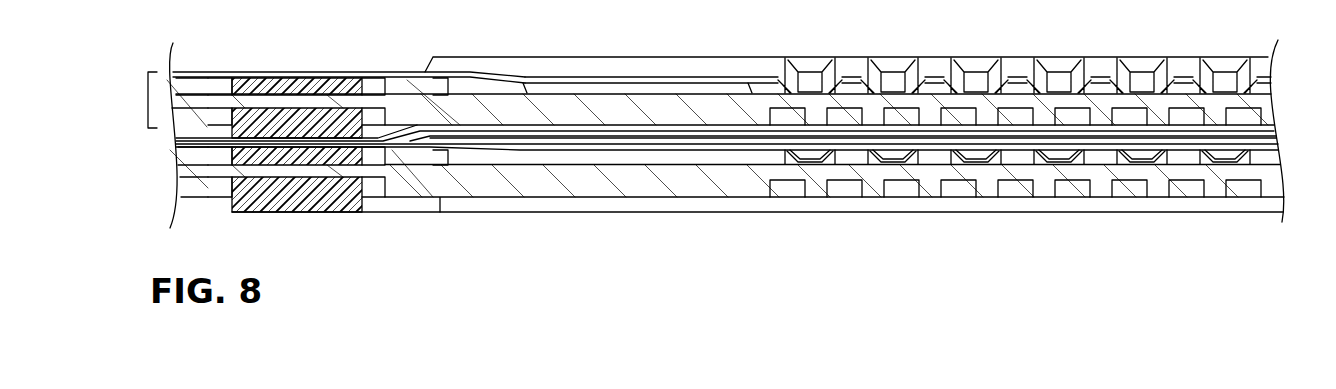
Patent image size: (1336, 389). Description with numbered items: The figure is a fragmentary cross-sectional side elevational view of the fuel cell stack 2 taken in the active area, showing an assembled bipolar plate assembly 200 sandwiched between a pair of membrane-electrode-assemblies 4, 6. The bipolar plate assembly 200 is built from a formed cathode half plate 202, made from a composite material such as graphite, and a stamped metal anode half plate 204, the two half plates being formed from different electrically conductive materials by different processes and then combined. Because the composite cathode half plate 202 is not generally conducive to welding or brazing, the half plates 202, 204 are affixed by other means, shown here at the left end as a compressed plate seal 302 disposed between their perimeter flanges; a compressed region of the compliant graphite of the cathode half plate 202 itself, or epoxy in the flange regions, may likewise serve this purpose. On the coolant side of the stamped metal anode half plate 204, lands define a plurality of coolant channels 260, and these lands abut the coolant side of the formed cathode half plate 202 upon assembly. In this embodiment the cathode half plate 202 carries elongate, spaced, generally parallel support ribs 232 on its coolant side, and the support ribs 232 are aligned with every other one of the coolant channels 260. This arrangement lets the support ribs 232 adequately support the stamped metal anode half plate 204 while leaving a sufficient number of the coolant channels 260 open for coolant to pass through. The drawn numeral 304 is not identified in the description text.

The fuel cell stack 2 is at (138, 83).
The bipolar plate assembly 200 is at (147, 100).
The plate seal 302 is at (300, 78).
The pad 304 is at (250, 127).
The stamped metal anode half plate 204 is at (653, 78).
The formed cathode half plate 202 is at (763, 105).
The membrane-electrode-assembly 4 is at (1312, 118).
The membrane-electrode-assembly 6 is at (1302, 127).
The coolant channel 260 is at (930, 150).
The support rib 232 is at (932, 87).